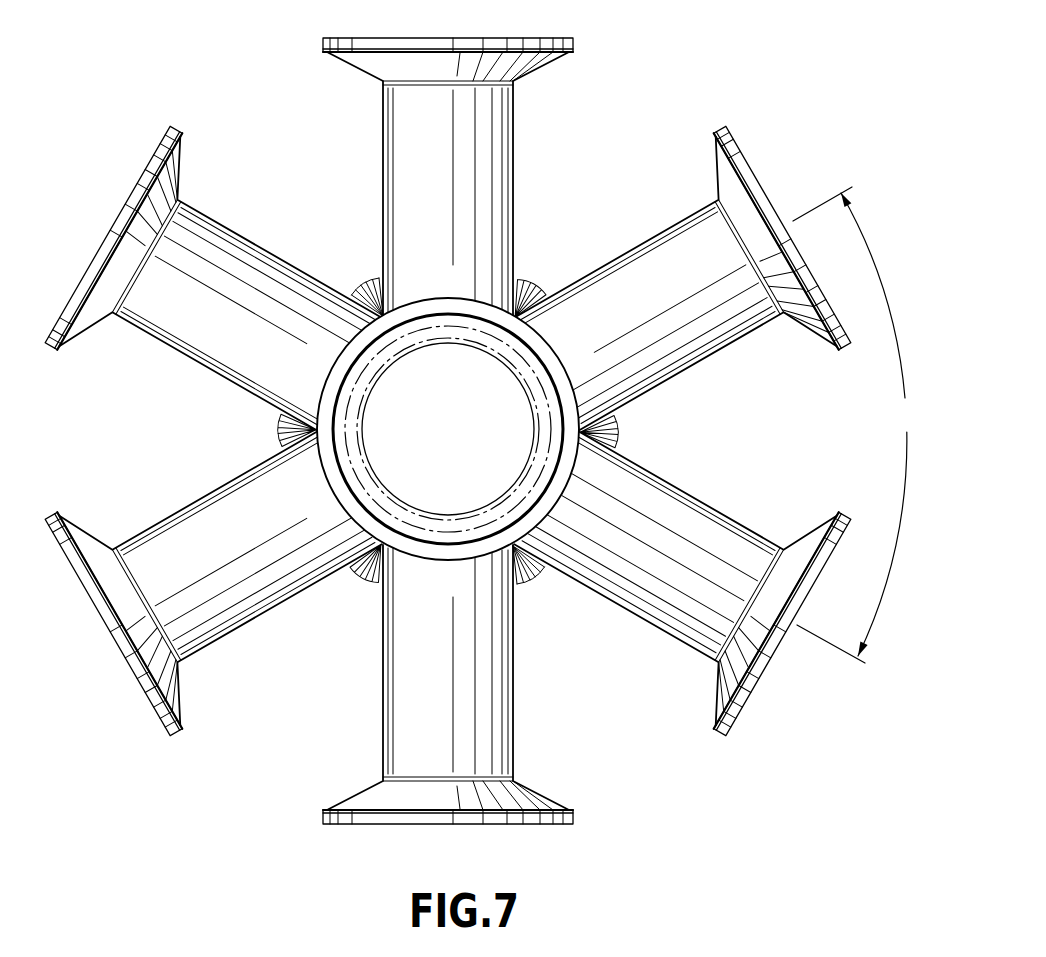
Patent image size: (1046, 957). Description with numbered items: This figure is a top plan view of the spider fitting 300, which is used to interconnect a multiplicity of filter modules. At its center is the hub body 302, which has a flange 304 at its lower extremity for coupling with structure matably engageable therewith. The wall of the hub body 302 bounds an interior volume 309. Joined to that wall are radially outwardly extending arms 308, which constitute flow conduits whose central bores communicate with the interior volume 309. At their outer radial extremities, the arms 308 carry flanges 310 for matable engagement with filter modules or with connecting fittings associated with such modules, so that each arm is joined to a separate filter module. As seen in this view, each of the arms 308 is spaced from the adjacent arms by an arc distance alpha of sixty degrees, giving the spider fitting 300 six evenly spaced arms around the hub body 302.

The spider fitting 300 is at (478, 418).
The hub body 302 is at (398, 463).
The flange 304 is at (530, 565).
The arms 308 is at (668, 560).
The interior volume 309 is at (378, 431).
The flanges 310 is at (740, 693).